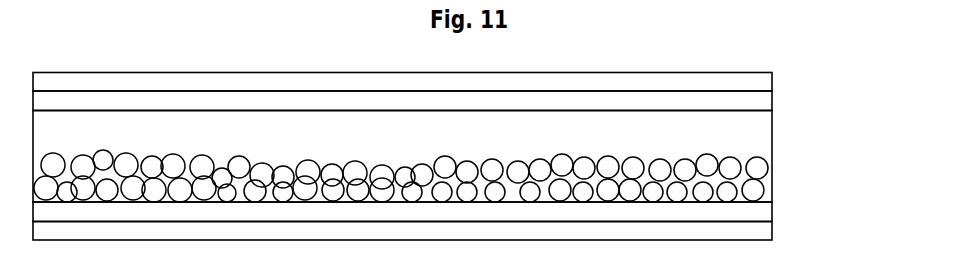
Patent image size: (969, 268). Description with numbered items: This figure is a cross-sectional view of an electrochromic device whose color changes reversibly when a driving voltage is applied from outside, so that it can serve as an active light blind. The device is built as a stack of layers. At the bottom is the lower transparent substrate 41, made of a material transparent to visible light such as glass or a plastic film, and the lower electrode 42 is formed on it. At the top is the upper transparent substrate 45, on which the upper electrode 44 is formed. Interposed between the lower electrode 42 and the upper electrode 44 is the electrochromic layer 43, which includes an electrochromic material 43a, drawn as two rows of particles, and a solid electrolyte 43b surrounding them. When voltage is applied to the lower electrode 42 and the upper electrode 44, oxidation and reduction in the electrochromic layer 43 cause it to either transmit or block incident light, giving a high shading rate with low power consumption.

The lower transparent substrate 41 is at (767, 233).
The lower electrode 42 is at (767, 214).
The electrochromic layer 43 is at (463, 157).
The electrochromic material 43a is at (760, 168).
The solid electrolyte 43b is at (758, 132).
The upper electrode 44 is at (768, 106).
The upper transparent substrate 45 is at (768, 84).